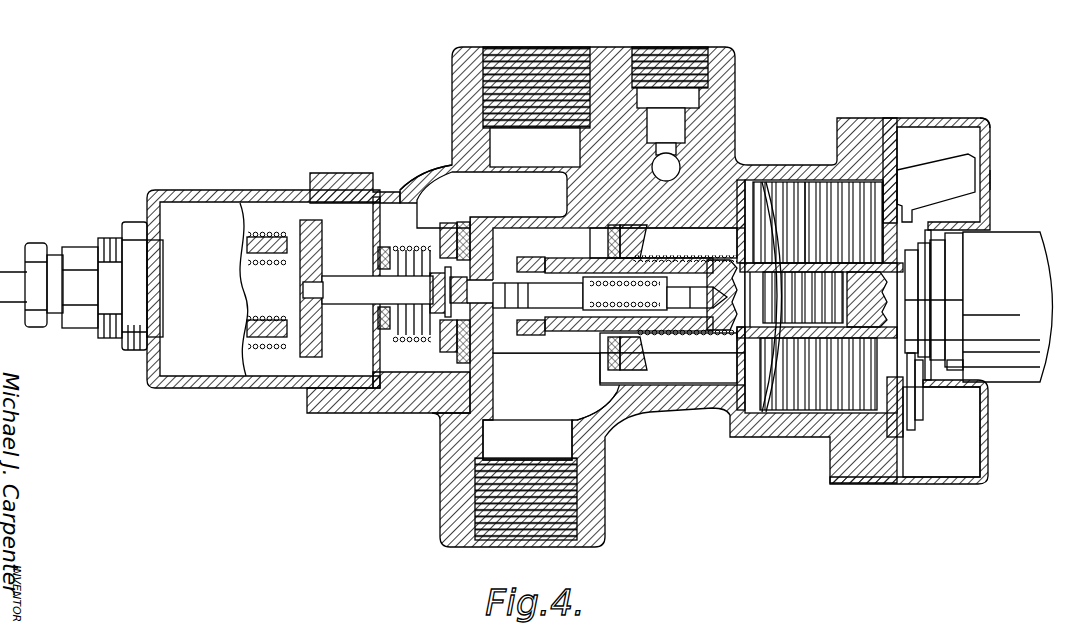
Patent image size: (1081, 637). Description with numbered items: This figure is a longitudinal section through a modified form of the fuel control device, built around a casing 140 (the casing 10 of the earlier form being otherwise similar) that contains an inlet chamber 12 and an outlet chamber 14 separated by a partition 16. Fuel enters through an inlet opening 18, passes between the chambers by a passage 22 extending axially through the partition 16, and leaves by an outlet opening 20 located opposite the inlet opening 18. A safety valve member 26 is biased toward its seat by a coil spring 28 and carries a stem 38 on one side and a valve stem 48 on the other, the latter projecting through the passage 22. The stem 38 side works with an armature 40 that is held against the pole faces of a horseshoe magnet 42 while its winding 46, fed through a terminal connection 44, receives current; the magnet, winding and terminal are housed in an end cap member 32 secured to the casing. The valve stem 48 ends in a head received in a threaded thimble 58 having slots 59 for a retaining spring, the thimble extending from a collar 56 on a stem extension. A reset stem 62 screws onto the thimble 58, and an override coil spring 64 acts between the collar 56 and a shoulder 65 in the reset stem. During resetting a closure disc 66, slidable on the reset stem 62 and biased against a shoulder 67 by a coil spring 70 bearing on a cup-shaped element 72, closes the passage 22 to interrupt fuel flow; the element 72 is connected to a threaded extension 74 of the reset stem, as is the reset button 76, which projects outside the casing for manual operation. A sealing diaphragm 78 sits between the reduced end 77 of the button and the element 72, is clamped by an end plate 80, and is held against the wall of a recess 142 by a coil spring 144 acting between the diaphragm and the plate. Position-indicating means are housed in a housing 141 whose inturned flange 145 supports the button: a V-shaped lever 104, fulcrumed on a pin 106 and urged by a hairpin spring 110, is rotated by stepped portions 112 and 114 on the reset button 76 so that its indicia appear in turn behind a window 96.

The casing 10 is at (13, 270).
The inlet chamber 12 is at (672, 392).
The outlet chamber 14 is at (442, 185).
The partition 16 is at (527, 440).
The inlet opening 18 is at (482, 530).
The outlet opening 20 is at (543, 62).
The passage 22 is at (512, 222).
The valve member 26 is at (428, 404).
The coil spring 28 is at (394, 225).
The end cap member 32 is at (212, 190).
The stem 38 is at (348, 305).
The armature 40 is at (322, 262).
The horseshoe magnet 42 is at (277, 262).
The terminal connection 44 is at (112, 340).
The winding 46 is at (278, 338).
The valve stem 48 is at (500, 276).
The collar 56 is at (580, 293).
The threaded thimble 58 is at (515, 326).
The slots 59 is at (538, 262).
The reset stem 62 is at (548, 362).
The coil spring 64 is at (682, 297).
The shoulder 65 is at (662, 332).
The closure disc 66 is at (660, 352).
The shoulder 67 is at (590, 368).
The coil spring 70 is at (672, 226).
The cup-shaped element 72 is at (722, 238).
The threaded extension 74 is at (718, 395).
The reset button 76 is at (1003, 242).
The reduced end 77 is at (812, 432).
The sealing diaphragm 78 is at (752, 432).
The end plate 80 is at (893, 118).
The window 96 is at (991, 180).
The lever 104 is at (938, 170).
The pin 106 is at (906, 430).
The hairpin spring 110 is at (918, 420).
The stepped portion 112 is at (916, 392).
The stepped portion 114 is at (965, 370).
The casing 140 is at (784, 165).
The housing 141 is at (992, 128).
The recess 142 is at (768, 182).
The coil spring 144 is at (806, 182).
The inturned flange 145 is at (989, 420).